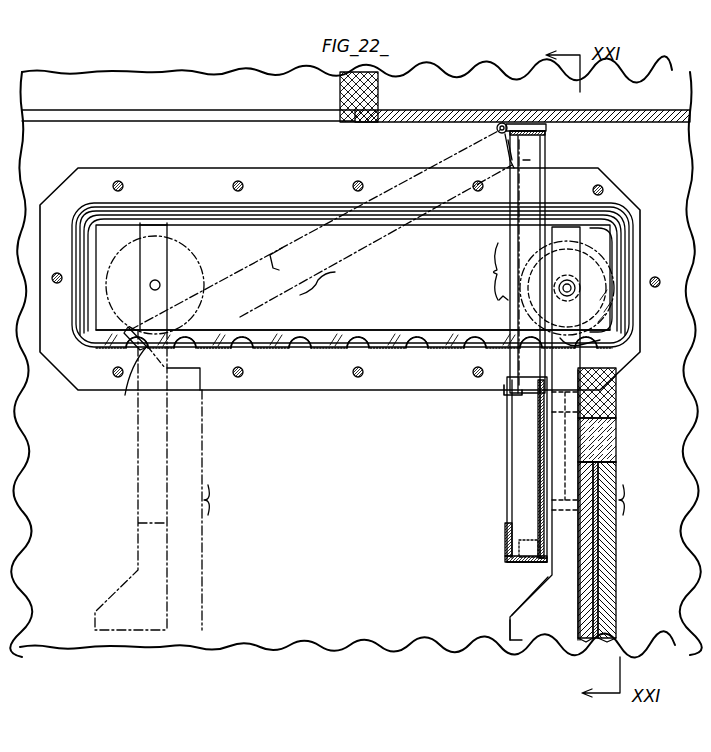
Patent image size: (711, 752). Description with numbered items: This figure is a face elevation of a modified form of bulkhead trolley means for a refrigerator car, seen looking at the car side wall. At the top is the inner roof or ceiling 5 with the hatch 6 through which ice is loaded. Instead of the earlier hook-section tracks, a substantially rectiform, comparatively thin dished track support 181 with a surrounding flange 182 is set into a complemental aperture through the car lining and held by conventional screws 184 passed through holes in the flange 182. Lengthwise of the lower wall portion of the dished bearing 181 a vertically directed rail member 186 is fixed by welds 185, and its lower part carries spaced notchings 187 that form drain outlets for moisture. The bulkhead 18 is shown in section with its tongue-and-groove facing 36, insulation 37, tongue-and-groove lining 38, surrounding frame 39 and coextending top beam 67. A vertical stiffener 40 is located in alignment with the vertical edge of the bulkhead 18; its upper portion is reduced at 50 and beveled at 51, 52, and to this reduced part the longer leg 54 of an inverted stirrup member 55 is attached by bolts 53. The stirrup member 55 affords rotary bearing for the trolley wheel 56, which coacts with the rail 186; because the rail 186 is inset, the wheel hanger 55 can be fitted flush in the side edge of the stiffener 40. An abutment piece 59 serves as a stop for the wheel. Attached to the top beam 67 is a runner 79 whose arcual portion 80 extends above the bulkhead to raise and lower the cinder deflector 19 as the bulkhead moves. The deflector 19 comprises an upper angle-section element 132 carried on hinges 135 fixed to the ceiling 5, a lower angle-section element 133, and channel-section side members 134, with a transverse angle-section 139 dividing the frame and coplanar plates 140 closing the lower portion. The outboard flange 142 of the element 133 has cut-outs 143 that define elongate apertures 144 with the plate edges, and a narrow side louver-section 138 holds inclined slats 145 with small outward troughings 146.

The inner roof or ceiling 5 is at (438, 113).
The hatch 6 is at (340, 93).
The bulkhead 18 is at (430, 500).
The cinder deflector 19 is at (508, 228).
The tongue-and-groove facing 36 is at (618, 600).
The insulation 37 is at (600, 545).
The tongue-and-groove lining 38 is at (586, 600).
The surrounding frame 39 is at (618, 460).
The vertical stiffener 40 is at (510, 625).
The vertically reduced part 50 is at (565, 544).
The bevel 51 is at (552, 383).
The bevel 52 is at (518, 594).
The bolt 53 is at (565, 451).
The longer leg 54 is at (578, 344).
The inverted stirrup member 55 is at (583, 272).
The trolley wheel 56 is at (188, 262).
The abutment piece 59 is at (614, 318).
The coextending beam 67 is at (606, 440).
The runner 79 is at (137, 425).
The arcual portion 80 is at (135, 392).
The upper angle-section element 132 is at (546, 145).
The lower angle-section element 133 is at (505, 540).
The side member 134 is at (524, 487).
The hinge 135 is at (505, 123).
The side louver-section 138 is at (480, 271).
The intermediate transverse angle-section 139 is at (506, 394).
The plate 140 is at (540, 456).
The outboard flange 142 is at (512, 564).
The cut-out 143 is at (528, 562).
The elongate aperture 144 is at (533, 564).
The inclined slat 145 is at (530, 189).
The smaller troughing 146 is at (505, 300).
The dished track support 181 is at (352, 275).
The surrounding flange 182 is at (313, 170).
The screw 184 is at (232, 186).
The weld 185 is at (187, 349).
The rail member 186 is at (383, 332).
The notching 187 is at (352, 350).